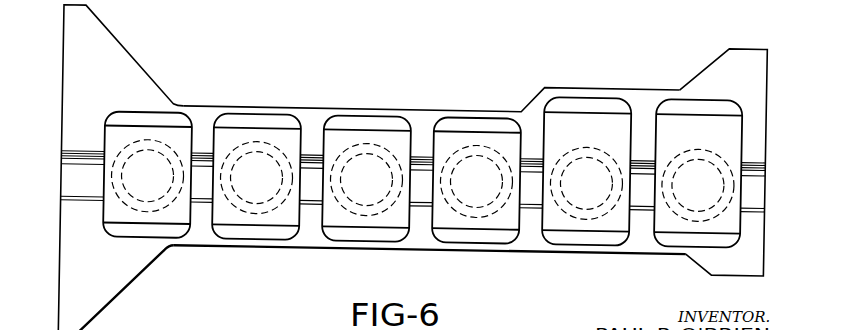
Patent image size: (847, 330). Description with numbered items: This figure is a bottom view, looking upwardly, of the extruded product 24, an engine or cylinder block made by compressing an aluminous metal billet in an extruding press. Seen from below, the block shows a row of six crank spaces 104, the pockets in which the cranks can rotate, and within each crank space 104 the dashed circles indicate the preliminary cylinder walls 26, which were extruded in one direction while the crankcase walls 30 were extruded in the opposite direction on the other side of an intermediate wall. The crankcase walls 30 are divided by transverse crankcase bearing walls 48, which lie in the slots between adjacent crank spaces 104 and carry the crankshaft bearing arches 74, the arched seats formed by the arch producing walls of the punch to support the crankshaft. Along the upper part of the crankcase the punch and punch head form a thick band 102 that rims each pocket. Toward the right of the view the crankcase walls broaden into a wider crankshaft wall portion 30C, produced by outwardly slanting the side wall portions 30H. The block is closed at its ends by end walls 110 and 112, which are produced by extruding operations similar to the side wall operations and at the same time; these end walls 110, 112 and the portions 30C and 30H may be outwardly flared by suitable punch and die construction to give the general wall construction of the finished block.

The product 24 is at (263, 298).
The preliminary cylinder walls 26 is at (150, 152).
The crankcase walls 30 is at (367, 112).
The side wall portions 30H is at (535, 98).
The wider crankshaft wall portion 30C is at (588, 93).
The crankcase bearing walls 48 is at (637, 147).
The crankshaft bearing arches 74 is at (68, 182).
The thick band 102 is at (230, 118).
The crank spaces 104 is at (110, 133).
The end wall 110 is at (128, 63).
The end wall 112 is at (735, 53).